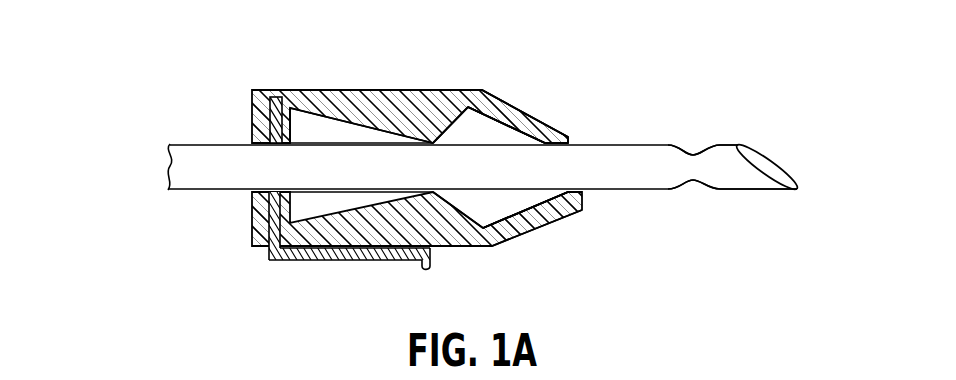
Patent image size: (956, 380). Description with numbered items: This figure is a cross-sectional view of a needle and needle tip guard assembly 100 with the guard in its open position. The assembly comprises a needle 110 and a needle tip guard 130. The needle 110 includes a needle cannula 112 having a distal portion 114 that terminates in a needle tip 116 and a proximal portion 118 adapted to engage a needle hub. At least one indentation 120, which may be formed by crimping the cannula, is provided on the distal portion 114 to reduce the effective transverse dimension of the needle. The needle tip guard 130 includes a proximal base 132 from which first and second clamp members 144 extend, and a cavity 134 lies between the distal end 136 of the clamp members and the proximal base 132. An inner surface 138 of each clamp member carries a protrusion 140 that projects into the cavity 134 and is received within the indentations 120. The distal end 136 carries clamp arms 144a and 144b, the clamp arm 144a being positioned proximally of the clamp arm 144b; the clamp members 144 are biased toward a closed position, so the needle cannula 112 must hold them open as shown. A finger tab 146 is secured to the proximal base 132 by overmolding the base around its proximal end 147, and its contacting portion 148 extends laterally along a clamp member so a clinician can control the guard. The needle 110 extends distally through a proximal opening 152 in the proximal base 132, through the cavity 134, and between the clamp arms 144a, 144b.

The needle and needle tip guard assembly 100 is at (663, 32).
The needle 110 is at (192, 136).
The needle cannula 112 is at (580, 178).
The distal portion 114 is at (745, 125).
The needle tip 116 is at (783, 168).
The proximal portion 118 is at (176, 200).
The indentation 120 is at (693, 156).
The needle tip guard 130 is at (268, 56).
The proximal base 132 is at (252, 95).
The cavity 134 is at (320, 136).
The distal end 136 is at (483, 88).
The inner surface 138 is at (405, 136).
The protrusion 140 is at (433, 142).
The clamp member 144 is at (371, 90).
The clamp arm 144a is at (538, 117).
The clamp arm 144b is at (535, 233).
The finger tab 146 is at (280, 272).
The proximal end 147 is at (270, 122).
The contacting portion 148 is at (370, 260).
The proximal opening 152 is at (252, 197).